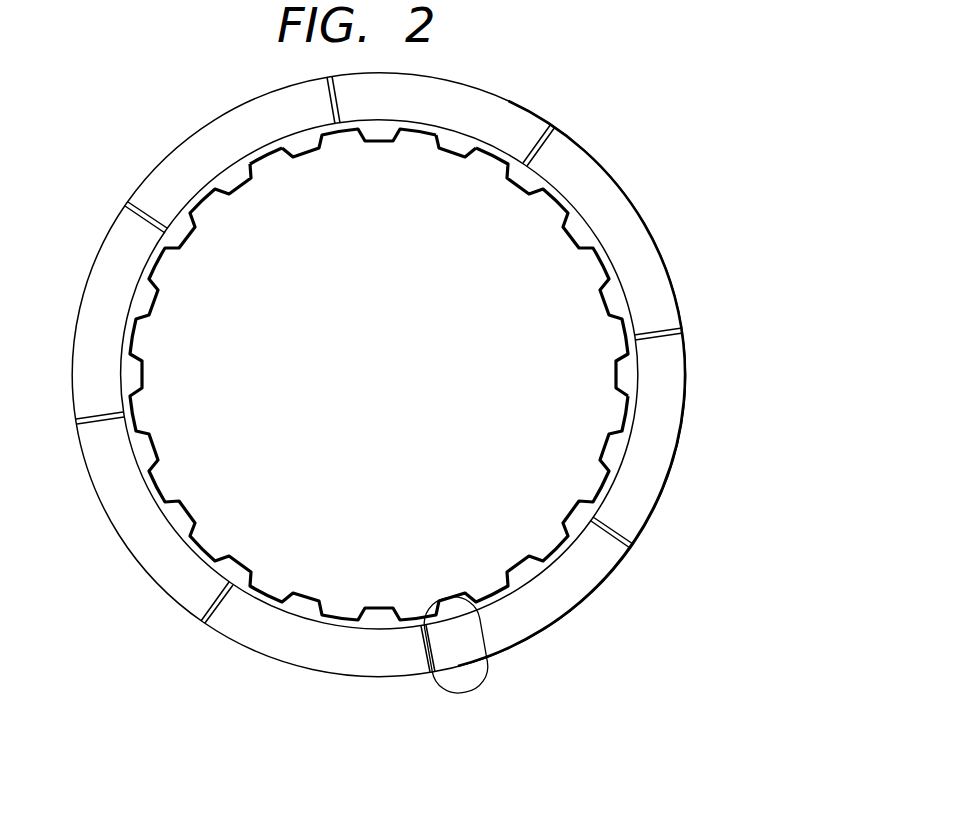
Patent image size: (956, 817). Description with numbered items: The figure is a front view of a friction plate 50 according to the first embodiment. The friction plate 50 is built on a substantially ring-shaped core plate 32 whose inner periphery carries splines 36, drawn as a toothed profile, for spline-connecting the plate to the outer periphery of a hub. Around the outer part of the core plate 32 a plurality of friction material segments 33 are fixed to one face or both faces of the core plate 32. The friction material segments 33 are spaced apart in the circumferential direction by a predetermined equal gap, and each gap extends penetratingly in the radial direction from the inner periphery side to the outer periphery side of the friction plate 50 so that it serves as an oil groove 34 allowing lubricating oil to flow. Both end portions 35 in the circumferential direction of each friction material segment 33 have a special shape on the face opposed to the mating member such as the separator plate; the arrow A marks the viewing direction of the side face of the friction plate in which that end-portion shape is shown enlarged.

The friction plate 50 is at (612, 124).
The friction material segment 33 is at (631, 228).
The oil groove 34 is at (687, 326).
The end portion 35 is at (690, 356).
The core plate 32 is at (451, 142).
The spline 36 is at (260, 158).
The arrow A is at (436, 702).